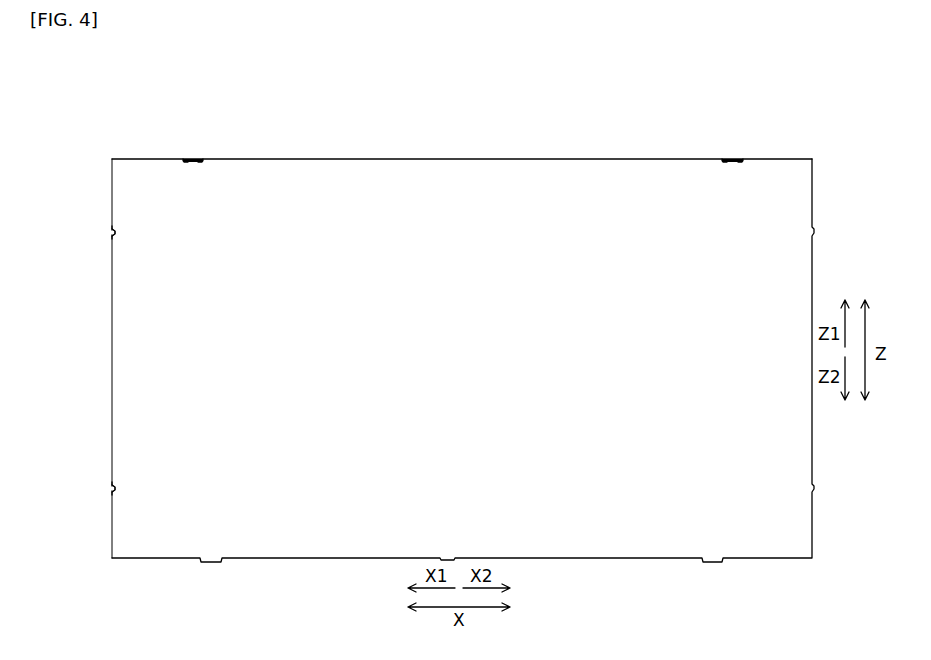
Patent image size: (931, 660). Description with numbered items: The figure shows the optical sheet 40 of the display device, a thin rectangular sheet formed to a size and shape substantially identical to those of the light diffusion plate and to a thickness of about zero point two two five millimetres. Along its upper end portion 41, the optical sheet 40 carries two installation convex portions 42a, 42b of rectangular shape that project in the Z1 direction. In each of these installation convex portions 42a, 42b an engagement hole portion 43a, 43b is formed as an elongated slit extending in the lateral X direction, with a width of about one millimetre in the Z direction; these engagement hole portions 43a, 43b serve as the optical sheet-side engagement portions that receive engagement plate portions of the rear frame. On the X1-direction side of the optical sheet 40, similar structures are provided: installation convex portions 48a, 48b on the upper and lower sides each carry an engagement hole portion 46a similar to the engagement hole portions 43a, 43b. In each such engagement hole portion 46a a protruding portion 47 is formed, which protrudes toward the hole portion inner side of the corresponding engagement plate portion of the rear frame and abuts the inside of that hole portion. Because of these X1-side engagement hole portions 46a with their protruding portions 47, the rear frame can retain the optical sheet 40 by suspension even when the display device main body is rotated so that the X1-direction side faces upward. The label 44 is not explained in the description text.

The optical sheet 40 is at (507, 195).
The upper end portion 41 is at (428, 158).
The installation convex portion 42a is at (202, 158).
The installation convex portion 42b is at (742, 158).
The engagement hole portion 43a is at (185, 158).
The engagement hole portion 43b is at (723, 158).
The recess 44 is at (191, 158).
The engagement hole portion 46a is at (111, 236).
The protruding portion 47 is at (111, 233).
The installation convex portion 48a is at (111, 230).
The installation convex portion 48b is at (111, 486).